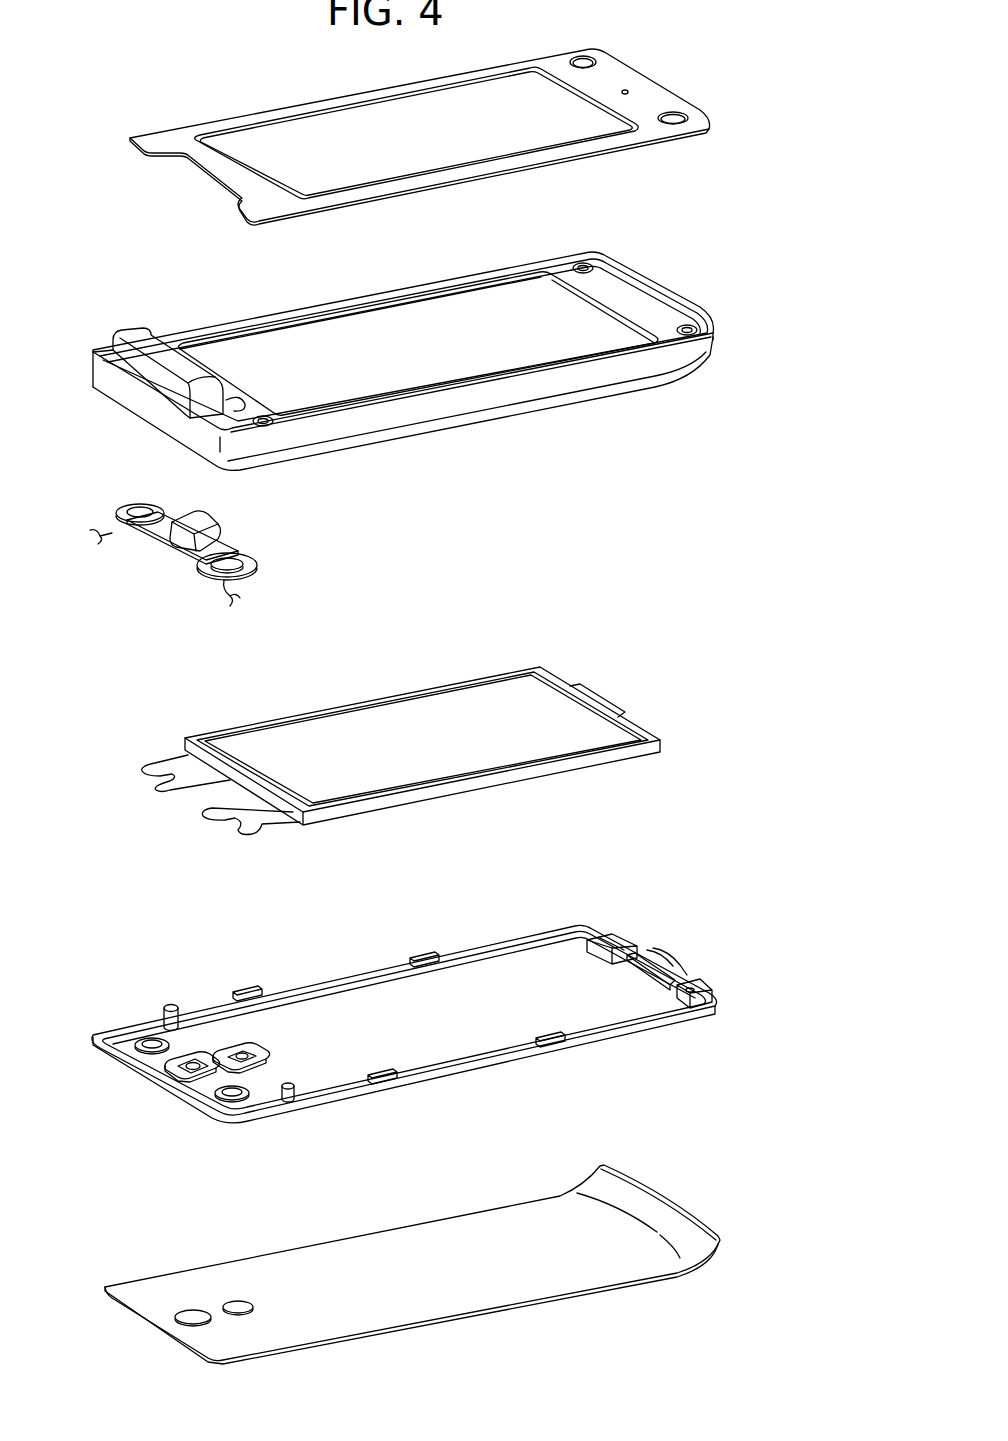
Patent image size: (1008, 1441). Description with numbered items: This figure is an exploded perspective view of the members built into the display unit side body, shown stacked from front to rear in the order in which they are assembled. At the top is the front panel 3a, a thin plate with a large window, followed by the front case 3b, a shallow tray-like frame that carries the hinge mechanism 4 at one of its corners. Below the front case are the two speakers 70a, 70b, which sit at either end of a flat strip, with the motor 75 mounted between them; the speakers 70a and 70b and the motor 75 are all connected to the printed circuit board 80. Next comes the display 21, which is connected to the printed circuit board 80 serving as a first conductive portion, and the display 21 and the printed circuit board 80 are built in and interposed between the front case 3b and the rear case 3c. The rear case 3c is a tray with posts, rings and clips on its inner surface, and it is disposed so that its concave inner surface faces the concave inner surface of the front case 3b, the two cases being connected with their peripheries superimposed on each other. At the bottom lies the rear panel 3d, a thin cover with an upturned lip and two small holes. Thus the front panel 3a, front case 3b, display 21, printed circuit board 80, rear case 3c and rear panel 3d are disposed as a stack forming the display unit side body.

The front panel 3a is at (667, 96).
The front case 3b is at (680, 290).
The hinge mechanism 4 is at (143, 342).
The speaker 70a is at (126, 507).
The motor 75 is at (196, 523).
The speaker 70b is at (257, 571).
The printed circuit board 80 is at (595, 768).
The display 21 is at (403, 765).
The rear case 3c is at (182, 1102).
The rear panel 3d is at (167, 1335).